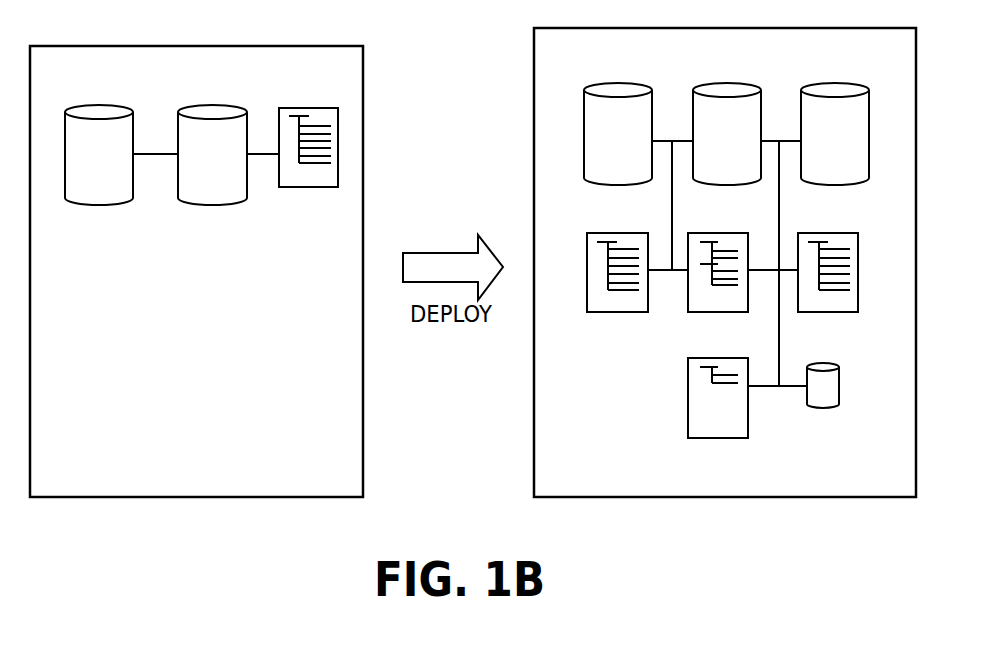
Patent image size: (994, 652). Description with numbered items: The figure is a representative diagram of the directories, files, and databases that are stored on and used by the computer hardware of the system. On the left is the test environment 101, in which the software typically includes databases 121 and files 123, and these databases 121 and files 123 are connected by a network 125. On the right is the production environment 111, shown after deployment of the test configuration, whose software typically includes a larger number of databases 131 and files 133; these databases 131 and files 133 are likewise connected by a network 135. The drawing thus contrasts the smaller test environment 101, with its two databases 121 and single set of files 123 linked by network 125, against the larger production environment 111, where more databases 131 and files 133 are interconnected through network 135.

The test environment 101 is at (363, 83).
The production environment 111 is at (534, 143).
The databases 121 is at (97, 103).
The files 123 is at (300, 106).
The network 125 is at (263, 155).
The databases 131 is at (618, 81).
The files 133 is at (617, 231).
The network 135 is at (797, 388).